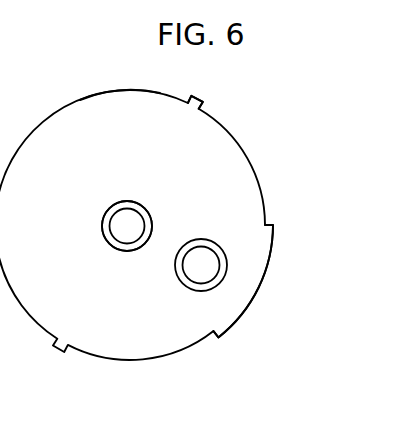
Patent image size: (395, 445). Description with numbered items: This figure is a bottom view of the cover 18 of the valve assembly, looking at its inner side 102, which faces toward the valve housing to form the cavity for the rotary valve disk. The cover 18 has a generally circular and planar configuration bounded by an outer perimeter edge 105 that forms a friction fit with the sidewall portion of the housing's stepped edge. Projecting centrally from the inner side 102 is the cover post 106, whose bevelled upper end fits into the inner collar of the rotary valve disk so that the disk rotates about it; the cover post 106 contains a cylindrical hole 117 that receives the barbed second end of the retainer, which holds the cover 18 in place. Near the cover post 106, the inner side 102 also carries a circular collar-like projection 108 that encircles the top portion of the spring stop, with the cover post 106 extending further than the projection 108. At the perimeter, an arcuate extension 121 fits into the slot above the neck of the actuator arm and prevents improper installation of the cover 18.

The cover 18 is at (247, 160).
The inner side 102 is at (170, 341).
The outer perimeter edge 105 is at (119, 90).
The cover post 106 is at (110, 248).
The circular collar-like projection 108 is at (223, 249).
The cylindrical hole 117 is at (135, 217).
The arcuate extension 121 is at (240, 317).